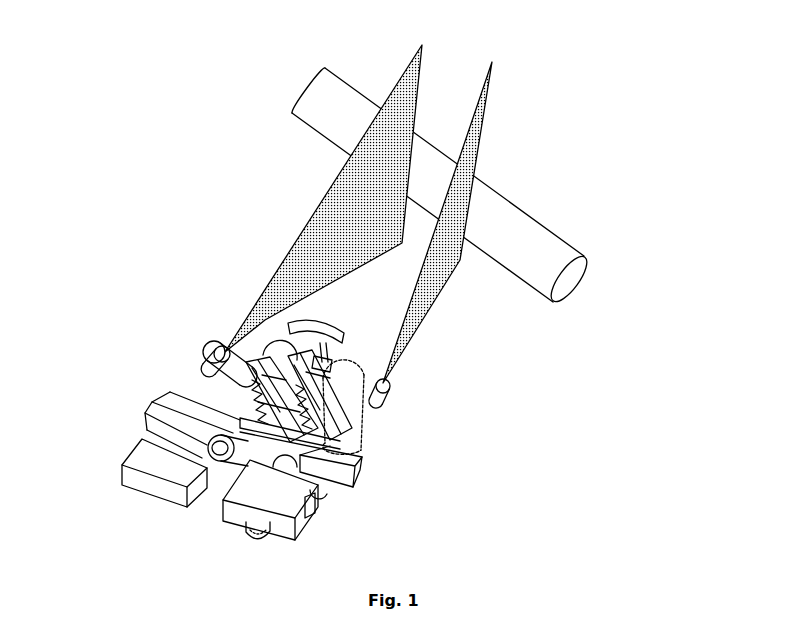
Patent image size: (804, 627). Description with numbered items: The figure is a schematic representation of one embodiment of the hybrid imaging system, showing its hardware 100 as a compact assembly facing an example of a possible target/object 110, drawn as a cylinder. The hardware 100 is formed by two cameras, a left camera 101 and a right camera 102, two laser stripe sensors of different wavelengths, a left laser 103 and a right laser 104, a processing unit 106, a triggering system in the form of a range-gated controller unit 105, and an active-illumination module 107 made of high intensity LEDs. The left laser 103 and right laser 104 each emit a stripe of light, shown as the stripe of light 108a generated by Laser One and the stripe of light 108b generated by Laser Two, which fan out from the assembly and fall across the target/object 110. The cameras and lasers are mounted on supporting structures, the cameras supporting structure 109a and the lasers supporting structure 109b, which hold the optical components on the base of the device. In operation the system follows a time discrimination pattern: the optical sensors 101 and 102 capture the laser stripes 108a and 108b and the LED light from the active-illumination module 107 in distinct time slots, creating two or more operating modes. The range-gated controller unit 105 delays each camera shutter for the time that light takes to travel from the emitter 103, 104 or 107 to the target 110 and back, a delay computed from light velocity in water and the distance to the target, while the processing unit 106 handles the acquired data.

The hardware 100 is at (228, 122).
The left camera 101 is at (237, 343).
The right camera 102 is at (380, 383).
The left laser 103 is at (152, 402).
The right laser 104 is at (362, 456).
The range-gated controller unit 105 is at (125, 462).
The processing unit 106 is at (298, 520).
The active-illumination module 107 is at (285, 325).
The stripe of light generated by Laser One 108a is at (307, 258).
The stripe of light generated by Laser Two 108b is at (413, 300).
The cameras supporting structure 109a is at (248, 383).
The bearing 109b is at (362, 485).
The target/object 110 is at (586, 263).